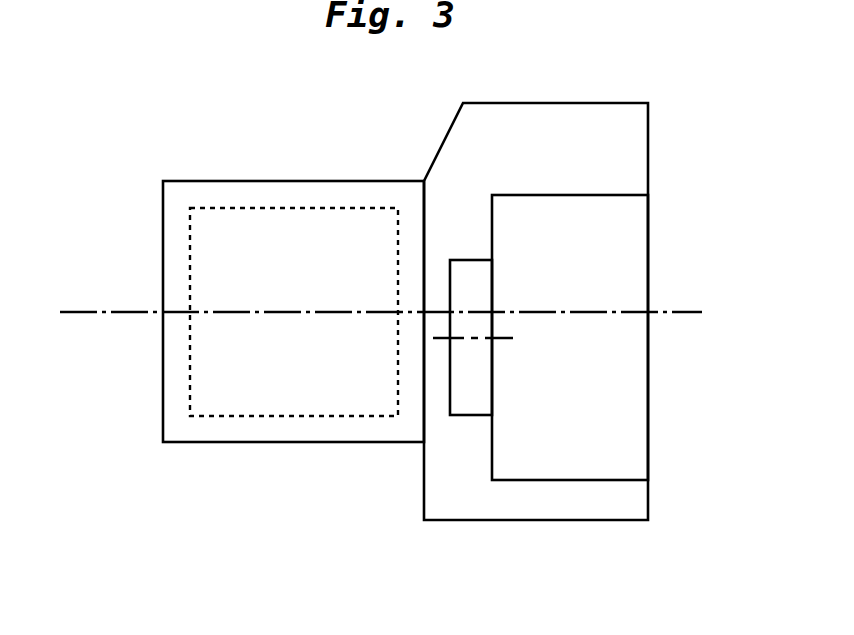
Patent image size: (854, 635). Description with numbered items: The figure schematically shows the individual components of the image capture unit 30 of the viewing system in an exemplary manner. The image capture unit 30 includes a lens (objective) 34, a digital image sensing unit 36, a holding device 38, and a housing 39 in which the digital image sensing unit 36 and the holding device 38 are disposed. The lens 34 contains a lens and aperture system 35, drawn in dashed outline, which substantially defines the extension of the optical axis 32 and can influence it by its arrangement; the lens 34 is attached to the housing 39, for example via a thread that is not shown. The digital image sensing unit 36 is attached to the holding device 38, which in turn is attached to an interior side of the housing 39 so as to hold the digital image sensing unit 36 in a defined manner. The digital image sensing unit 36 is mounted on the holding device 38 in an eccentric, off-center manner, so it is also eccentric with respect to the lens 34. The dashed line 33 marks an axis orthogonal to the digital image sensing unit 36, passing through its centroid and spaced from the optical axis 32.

The image capture unit 30 is at (380, 334).
The optical axis 32 is at (132, 313).
The dashed line 33 is at (518, 338).
The lens (objective) 34 is at (206, 464).
The lens and aperture system 35 is at (218, 235).
The digital image sensing unit 36 is at (482, 382).
The holding device 38 is at (621, 260).
The housing 39 is at (658, 116).